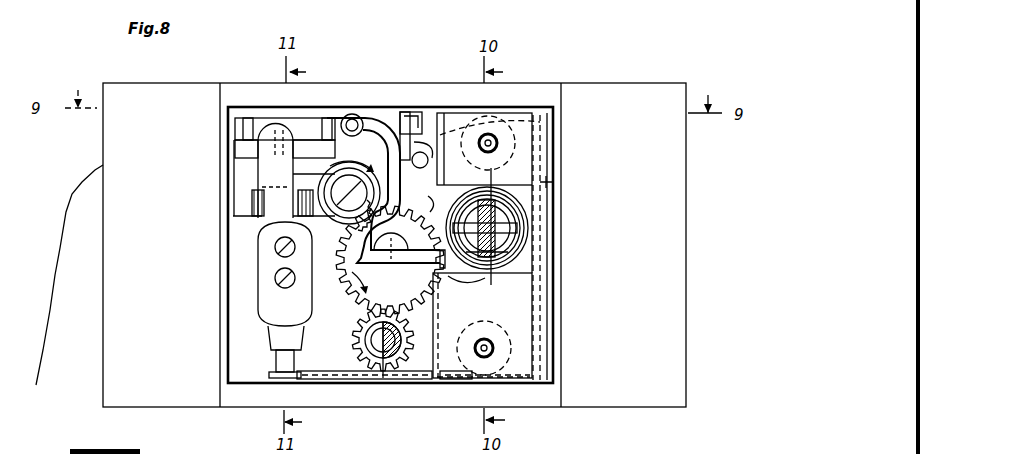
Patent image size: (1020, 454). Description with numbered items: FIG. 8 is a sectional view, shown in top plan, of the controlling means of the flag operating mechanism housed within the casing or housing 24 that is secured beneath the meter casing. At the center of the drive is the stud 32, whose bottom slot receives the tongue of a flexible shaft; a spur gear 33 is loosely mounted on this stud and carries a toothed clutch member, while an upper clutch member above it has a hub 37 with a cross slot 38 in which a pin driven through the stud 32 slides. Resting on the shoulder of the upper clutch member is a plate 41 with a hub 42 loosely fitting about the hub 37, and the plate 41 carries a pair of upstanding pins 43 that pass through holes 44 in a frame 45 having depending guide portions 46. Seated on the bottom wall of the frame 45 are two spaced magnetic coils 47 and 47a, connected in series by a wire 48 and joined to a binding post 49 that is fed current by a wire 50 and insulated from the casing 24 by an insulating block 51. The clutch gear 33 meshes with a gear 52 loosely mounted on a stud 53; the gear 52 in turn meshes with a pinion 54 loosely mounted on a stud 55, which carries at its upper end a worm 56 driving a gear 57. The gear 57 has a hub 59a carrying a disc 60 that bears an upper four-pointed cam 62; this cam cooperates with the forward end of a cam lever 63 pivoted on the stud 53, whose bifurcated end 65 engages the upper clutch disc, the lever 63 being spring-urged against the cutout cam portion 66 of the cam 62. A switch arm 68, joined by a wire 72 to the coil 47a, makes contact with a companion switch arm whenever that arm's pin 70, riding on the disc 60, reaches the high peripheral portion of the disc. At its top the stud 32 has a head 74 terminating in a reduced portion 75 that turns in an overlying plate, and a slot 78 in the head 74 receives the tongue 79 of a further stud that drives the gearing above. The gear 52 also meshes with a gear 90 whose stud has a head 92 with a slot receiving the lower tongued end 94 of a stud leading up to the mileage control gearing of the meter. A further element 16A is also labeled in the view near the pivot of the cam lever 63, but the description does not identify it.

The pivot pin 16A is at (398, 252).
The casing or housing 24 is at (646, 402).
The stud 32 is at (524, 250).
The spur gear 33 is at (421, 200).
The hub 37 is at (528, 232).
The cross slot 38 is at (530, 212).
The plate 41 is at (538, 302).
The hub 42 is at (522, 264).
The upstanding pins 43 is at (498, 140).
The holes 44 is at (492, 147).
The frame 45 is at (514, 331).
The depending guide portions 46 is at (452, 118).
The magnetic coil 47 is at (555, 155).
The magnetic coil 47a is at (462, 382).
The wire 48 is at (545, 286).
The binding post 49 is at (412, 123).
The wire 50 is at (428, 160).
The insulating block 51 is at (400, 120).
The gear 52 is at (358, 298).
The stud 53 is at (391, 315).
The pinion 54 is at (337, 233).
The stud 55 is at (340, 186).
The worm 56 is at (315, 243).
The gear 57 is at (252, 203).
The hub 59a is at (258, 174).
The disc 60 is at (235, 150).
The four-pointed cam 62 is at (308, 132).
The cam lever 63 is at (370, 132).
The bifurcated end 65 is at (557, 183).
The cutout cam portion 66 is at (243, 125).
The switch arm 68 is at (258, 230).
The pin or projection 70 is at (268, 118).
The wire 72 is at (297, 383).
The head 74 is at (497, 207).
The reduced portion 75 is at (482, 325).
The slot 78 is at (480, 274).
The tongue 79 is at (490, 200).
The gear 90 is at (373, 380).
The head 92 is at (366, 347).
The lower tongued end 94 is at (383, 378).